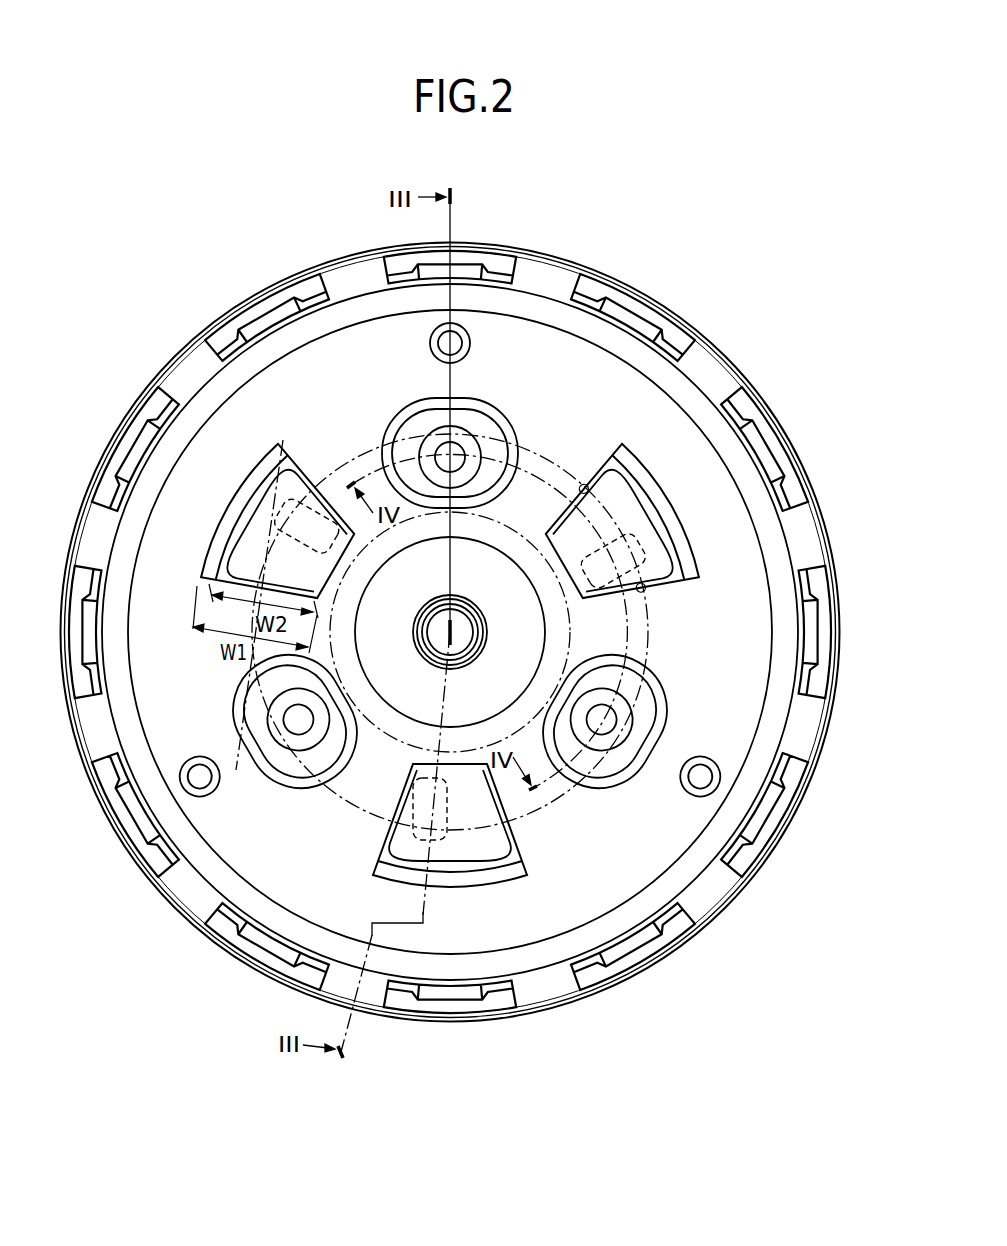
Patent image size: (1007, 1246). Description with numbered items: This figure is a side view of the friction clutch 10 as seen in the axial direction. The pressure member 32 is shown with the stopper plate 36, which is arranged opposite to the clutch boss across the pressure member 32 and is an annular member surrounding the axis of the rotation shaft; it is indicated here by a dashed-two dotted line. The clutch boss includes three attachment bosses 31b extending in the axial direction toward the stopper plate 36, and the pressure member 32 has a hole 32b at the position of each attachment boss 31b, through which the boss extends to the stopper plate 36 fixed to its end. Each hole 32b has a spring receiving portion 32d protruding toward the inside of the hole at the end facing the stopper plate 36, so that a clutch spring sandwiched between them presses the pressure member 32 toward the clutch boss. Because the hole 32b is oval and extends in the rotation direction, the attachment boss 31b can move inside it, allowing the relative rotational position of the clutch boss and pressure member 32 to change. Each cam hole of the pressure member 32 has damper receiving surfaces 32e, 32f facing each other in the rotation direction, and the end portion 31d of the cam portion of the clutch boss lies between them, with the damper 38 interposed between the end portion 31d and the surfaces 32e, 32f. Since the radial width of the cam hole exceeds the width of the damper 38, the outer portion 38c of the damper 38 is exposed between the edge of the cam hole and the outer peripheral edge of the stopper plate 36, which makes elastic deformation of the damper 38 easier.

The friction clutch 10 is at (710, 266).
The pressure member 32 is at (682, 383).
The hole 32b is at (421, 408).
The spring receiving portion 32d is at (464, 360).
The damper receiving surface 32e is at (641, 590).
The damper receiving surface 32f is at (583, 496).
The attachment boss 31b is at (467, 440).
The end portion 31d is at (277, 505).
The stopper plate 36 is at (549, 458).
The damper 38 is at (296, 455).
The outer portion 38c is at (242, 524).